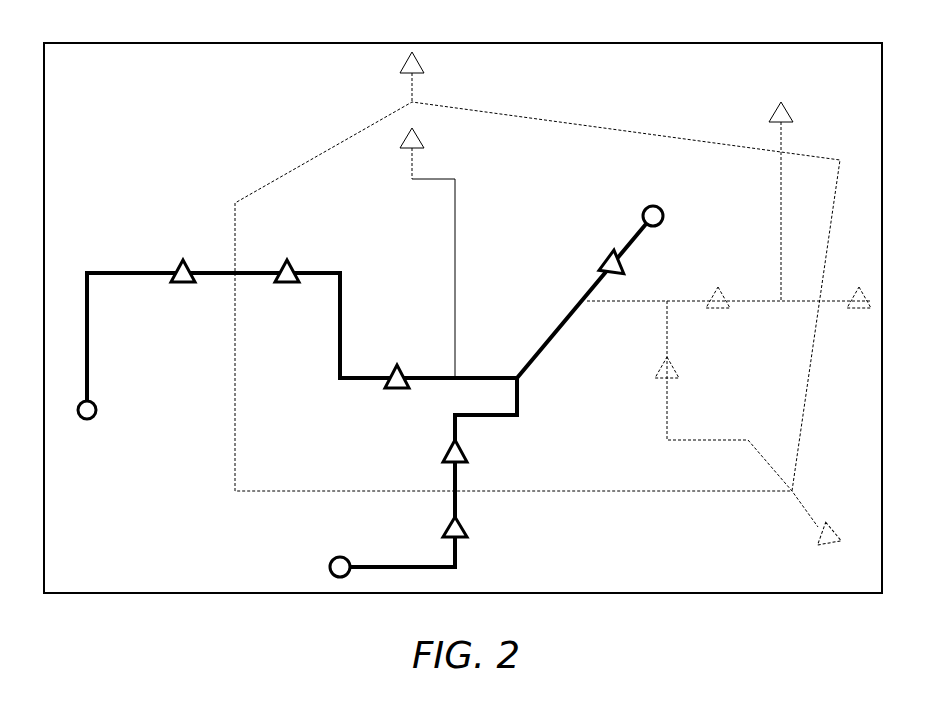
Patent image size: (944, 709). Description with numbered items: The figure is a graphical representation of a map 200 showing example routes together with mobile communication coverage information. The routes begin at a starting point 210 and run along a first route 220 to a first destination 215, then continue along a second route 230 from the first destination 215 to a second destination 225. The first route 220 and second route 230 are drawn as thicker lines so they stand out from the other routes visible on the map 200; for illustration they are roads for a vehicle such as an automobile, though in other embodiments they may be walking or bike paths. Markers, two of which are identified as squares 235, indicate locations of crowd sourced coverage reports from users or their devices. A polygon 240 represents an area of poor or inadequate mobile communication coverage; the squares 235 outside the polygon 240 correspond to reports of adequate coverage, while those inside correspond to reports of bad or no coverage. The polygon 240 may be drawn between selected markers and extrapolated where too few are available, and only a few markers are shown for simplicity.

The map 200 is at (463, 43).
The starting point 210 is at (97, 409).
The first destination 215 is at (664, 215).
The first route 220 is at (136, 272).
The second destination 225 is at (328, 567).
The second route 230 is at (458, 506).
The squares 235 is at (282, 270).
The polygon 240 is at (530, 118).